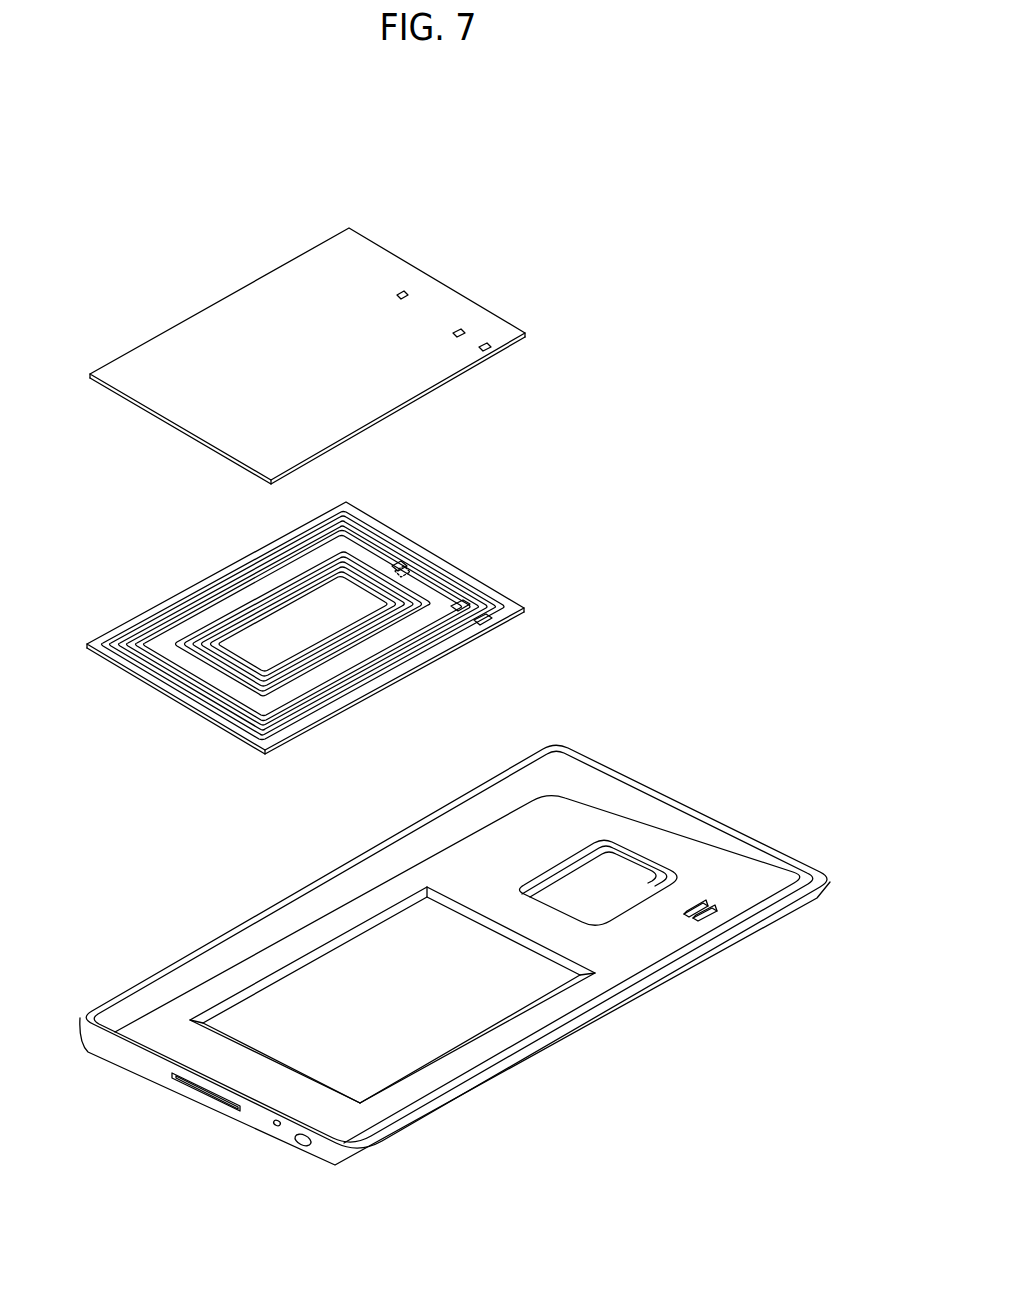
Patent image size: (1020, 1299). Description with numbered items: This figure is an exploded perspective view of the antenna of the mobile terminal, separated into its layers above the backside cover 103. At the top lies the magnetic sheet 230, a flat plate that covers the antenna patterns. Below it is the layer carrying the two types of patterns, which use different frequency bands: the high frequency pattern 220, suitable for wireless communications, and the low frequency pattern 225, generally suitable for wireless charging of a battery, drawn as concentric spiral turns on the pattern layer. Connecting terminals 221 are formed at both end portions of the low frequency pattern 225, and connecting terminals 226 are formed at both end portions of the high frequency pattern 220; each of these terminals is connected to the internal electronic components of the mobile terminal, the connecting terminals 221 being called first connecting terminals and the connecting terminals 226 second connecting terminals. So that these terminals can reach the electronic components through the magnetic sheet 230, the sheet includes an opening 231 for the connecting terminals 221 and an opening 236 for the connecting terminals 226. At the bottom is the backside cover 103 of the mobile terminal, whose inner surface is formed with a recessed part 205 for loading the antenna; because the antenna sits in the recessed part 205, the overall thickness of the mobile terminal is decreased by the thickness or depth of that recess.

The magnetic sheet 230 is at (367, 238).
The opening 236 is at (404, 291).
The opening 231 is at (462, 330).
The high frequency pattern 220 is at (160, 608).
The low frequency pattern 225 is at (253, 593).
The connecting terminals 226 is at (399, 561).
The connecting terminals 221 is at (462, 602).
The backside cover 103 is at (277, 927).
The recessed part 205 is at (363, 1017).